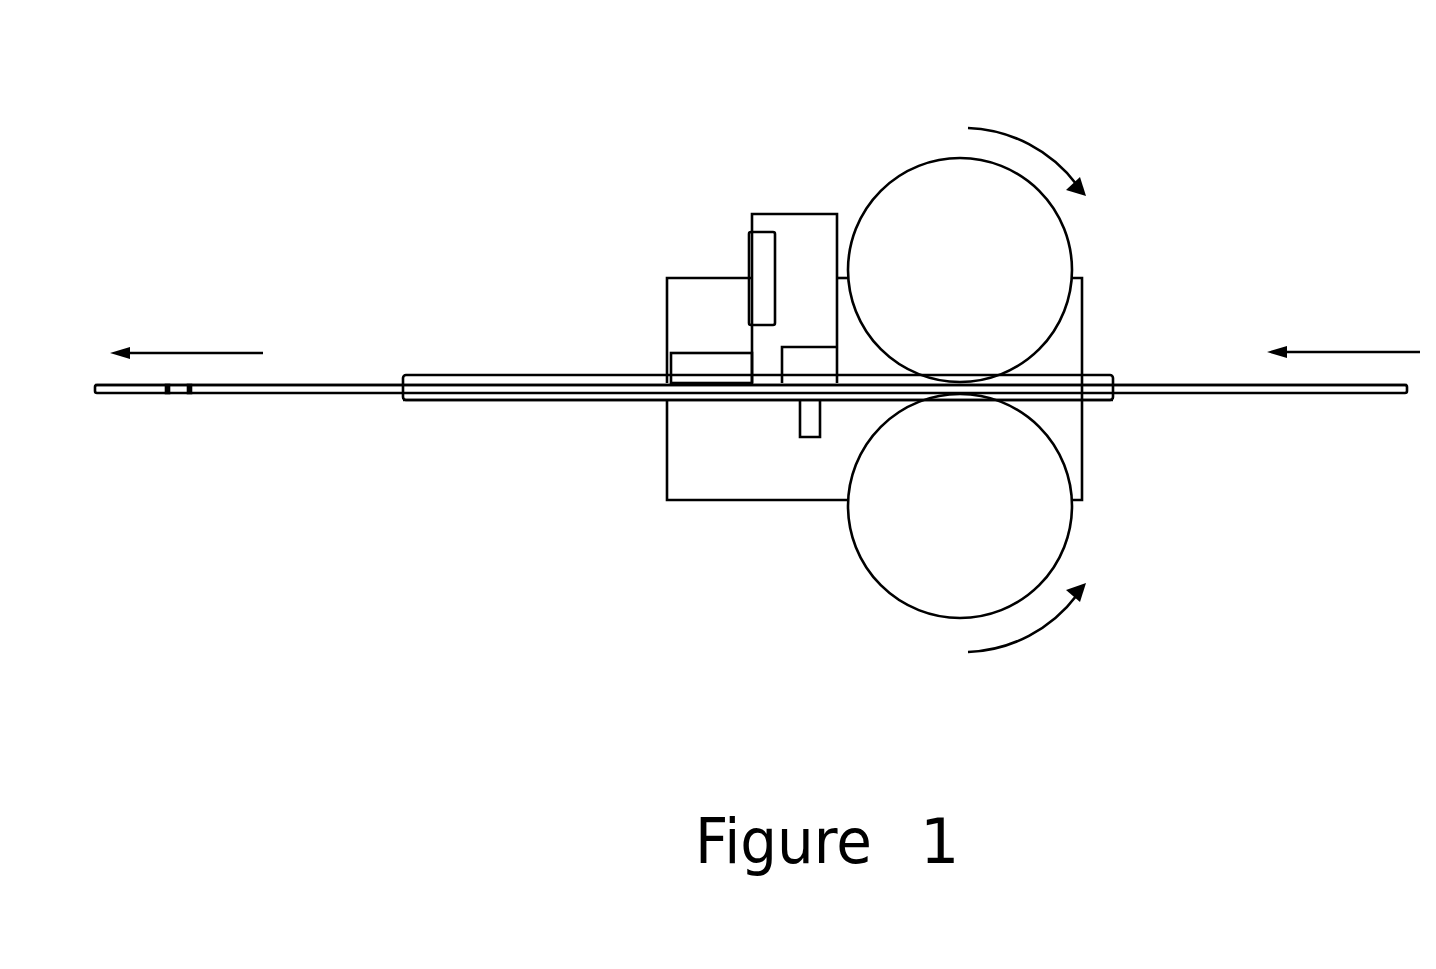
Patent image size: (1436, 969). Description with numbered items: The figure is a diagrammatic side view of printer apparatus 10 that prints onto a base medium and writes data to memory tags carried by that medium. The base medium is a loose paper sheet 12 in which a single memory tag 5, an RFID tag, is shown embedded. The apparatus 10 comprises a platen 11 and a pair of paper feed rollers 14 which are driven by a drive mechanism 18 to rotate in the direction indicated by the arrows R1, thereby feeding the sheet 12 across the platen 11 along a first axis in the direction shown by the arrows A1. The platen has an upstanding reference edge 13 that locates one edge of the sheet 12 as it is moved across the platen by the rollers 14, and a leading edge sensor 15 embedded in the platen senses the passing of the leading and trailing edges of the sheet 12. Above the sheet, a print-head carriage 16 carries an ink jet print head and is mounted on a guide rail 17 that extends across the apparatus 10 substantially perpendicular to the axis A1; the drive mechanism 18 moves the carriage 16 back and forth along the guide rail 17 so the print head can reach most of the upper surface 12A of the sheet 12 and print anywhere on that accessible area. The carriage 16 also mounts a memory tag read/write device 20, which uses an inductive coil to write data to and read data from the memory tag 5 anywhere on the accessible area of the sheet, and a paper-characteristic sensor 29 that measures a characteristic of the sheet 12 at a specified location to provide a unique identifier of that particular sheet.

The apparatus 10 is at (352, 108).
The sheet 12 is at (302, 415).
The upper surface 12A is at (354, 383).
The memory tag 5 is at (172, 400).
The reference edge 13 is at (523, 375).
The platen 11 is at (451, 401).
The first axis direction A1 is at (206, 353).
The memory tag read/write device 20 is at (686, 358).
The print-head carriage 16 is at (808, 213).
The guide rail 17 is at (755, 250).
The paper-characteristic sensor 29 is at (806, 372).
The drive mechanism 18 is at (672, 453).
The leading edge sensor 15 is at (812, 425).
The paper feed rollers 14 is at (1072, 253).
The roller rotation direction R1 is at (1037, 144).